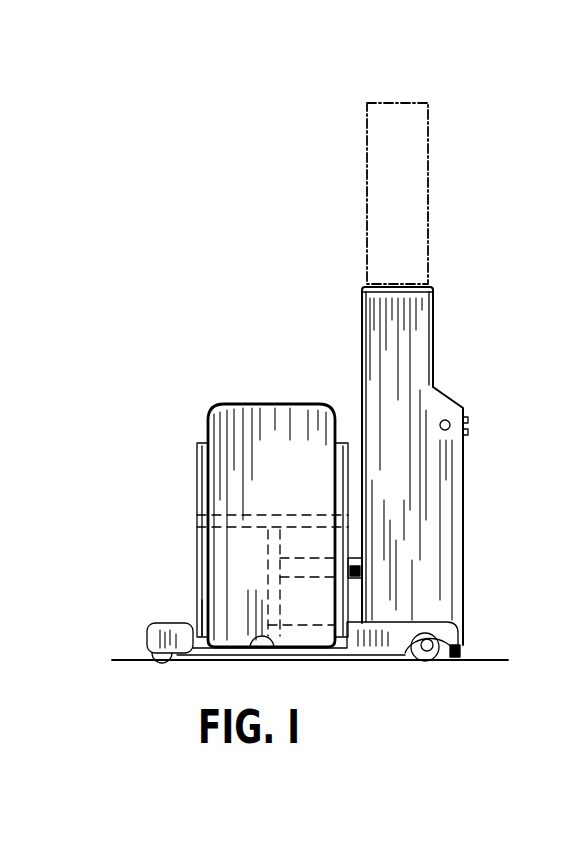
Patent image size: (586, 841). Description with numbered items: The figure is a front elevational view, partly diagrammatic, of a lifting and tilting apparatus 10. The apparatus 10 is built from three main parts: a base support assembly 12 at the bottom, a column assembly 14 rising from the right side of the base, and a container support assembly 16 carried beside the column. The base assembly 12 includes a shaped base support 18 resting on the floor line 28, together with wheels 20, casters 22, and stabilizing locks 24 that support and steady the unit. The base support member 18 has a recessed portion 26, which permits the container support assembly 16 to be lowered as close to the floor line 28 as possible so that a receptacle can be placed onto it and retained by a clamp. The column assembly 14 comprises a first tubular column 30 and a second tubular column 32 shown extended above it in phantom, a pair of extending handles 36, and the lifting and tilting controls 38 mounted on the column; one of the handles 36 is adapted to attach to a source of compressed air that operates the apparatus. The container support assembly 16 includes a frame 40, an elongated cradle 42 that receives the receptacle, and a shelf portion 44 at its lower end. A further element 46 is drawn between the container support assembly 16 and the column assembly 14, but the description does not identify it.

The lifting and tilting apparatus 10 is at (268, 243).
The base support assembly 12 is at (378, 660).
The column assembly 14 is at (438, 340).
The container support assembly 16 is at (206, 410).
The shaped base support 18 is at (167, 622).
The wheels 20 is at (161, 660).
The casters 22 is at (413, 661).
The stabilizing locks 24 is at (462, 655).
The recessed portion 26 is at (222, 636).
The floor line 28 is at (128, 656).
The first tubular column 30 is at (362, 320).
The second tubular column 32 is at (423, 233).
The extending handles 36 is at (448, 420).
The lifting and tilting controls 38 is at (470, 429).
The frame 40 is at (197, 464).
The elongated cradle 42 is at (290, 415).
The shelf portion 44 is at (264, 654).
The connector 46 is at (358, 574).